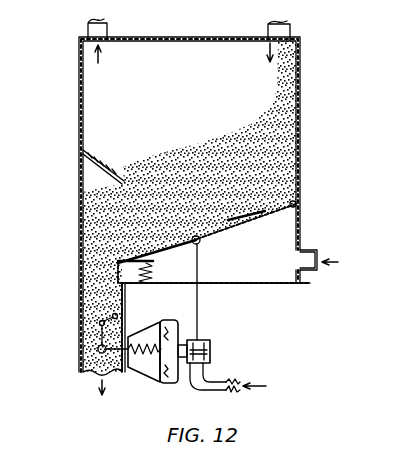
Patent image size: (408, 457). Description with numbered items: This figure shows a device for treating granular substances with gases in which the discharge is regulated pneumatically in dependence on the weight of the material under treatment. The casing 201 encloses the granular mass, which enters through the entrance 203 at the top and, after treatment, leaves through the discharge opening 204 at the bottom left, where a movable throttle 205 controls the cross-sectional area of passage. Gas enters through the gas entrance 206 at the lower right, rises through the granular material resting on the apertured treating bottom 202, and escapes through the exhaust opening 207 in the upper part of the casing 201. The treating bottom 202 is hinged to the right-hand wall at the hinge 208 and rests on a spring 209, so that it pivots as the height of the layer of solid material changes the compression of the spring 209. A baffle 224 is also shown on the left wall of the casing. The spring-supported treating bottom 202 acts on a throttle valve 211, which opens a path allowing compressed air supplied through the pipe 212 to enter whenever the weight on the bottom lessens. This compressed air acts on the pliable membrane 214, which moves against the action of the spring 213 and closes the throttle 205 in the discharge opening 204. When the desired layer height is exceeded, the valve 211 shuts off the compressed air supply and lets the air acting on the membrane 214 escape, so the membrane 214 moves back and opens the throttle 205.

The casing 201 is at (300, 171).
The apertured treating bottom 202 is at (247, 216).
The entrance for the granular material 203 is at (294, 27).
The discharge opening 204 is at (82, 338).
The movable throttle 205 is at (127, 304).
The gas entrance 206 is at (311, 271).
The exhaust opening 207 is at (107, 31).
The hinge 208 is at (300, 206).
The spring 209 is at (157, 275).
The throttle valve 211 is at (215, 345).
The pipe 212 is at (226, 380).
The spring 213 is at (148, 372).
The pliable membrane 214 is at (166, 320).
The baffle 224 is at (83, 165).